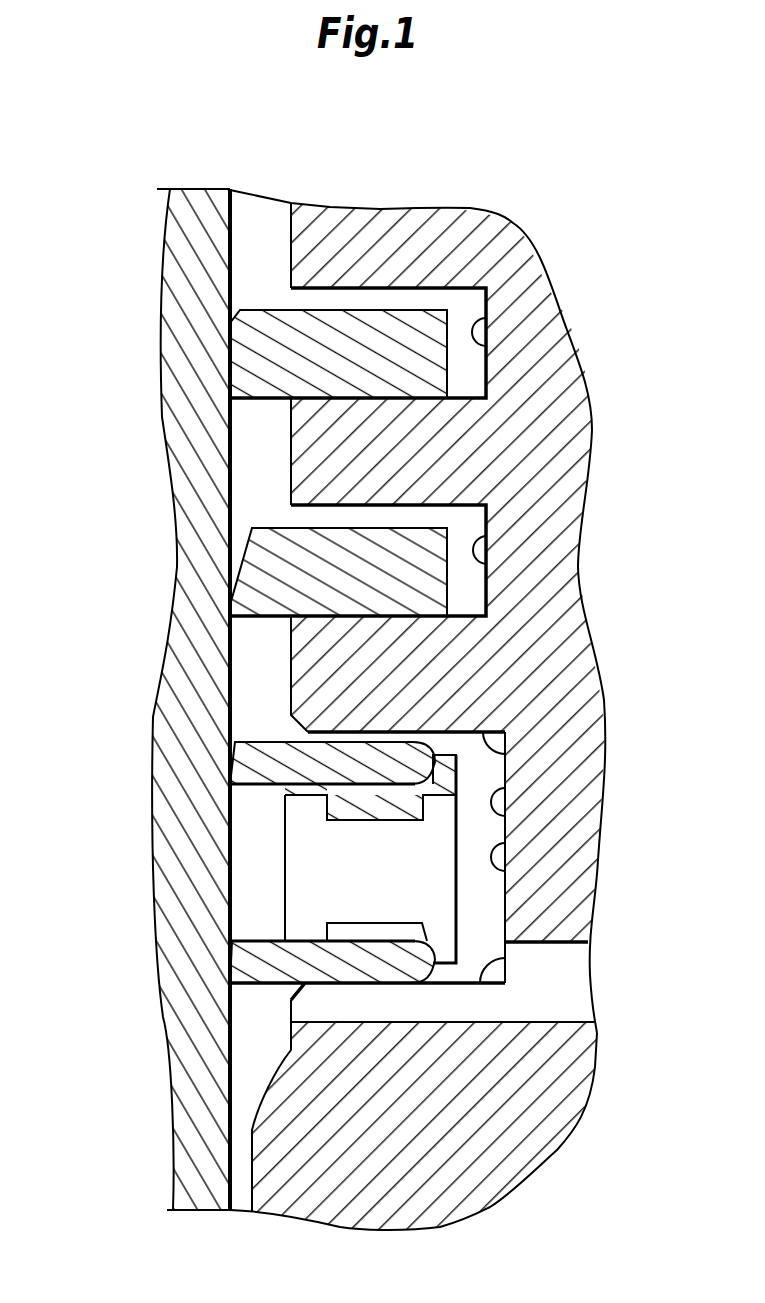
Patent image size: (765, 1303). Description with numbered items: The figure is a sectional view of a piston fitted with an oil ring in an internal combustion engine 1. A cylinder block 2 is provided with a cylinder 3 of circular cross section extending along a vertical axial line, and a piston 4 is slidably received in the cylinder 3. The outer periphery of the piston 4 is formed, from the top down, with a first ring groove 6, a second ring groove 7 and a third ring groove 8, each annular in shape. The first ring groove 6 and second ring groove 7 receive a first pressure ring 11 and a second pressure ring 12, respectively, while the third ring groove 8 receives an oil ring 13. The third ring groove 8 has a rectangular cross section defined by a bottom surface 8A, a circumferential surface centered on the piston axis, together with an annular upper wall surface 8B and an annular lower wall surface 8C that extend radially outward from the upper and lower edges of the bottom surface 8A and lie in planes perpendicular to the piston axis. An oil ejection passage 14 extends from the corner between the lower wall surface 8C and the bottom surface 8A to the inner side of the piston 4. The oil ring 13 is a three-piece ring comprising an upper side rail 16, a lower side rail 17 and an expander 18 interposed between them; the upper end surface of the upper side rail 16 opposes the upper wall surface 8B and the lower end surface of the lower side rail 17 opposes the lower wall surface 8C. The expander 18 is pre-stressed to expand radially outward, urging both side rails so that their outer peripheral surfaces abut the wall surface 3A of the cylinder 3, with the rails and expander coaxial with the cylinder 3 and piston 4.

The internal combustion engine 1 is at (158, 168).
The cylinder block 2 is at (178, 360).
The cylinder 3 is at (230, 221).
The wall surface 3A is at (230, 701).
The piston 4 is at (514, 225).
The first ring groove 6 is at (488, 348).
The second ring groove 7 is at (487, 563).
The third ring groove 8 is at (505, 848).
The bottom surface 8A is at (505, 790).
The upper wall surface 8B is at (505, 748).
The lower wall surface 8C is at (505, 966).
The first pressure ring 11 is at (268, 314).
The second pressure ring 12 is at (277, 534).
The oil ring 13 is at (283, 893).
The oil ejection passage 14 is at (550, 1022).
The upper side rail 16 is at (252, 748).
The lower side rail 17 is at (258, 945).
The expander 18 is at (443, 886).